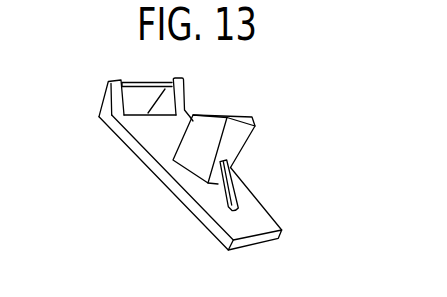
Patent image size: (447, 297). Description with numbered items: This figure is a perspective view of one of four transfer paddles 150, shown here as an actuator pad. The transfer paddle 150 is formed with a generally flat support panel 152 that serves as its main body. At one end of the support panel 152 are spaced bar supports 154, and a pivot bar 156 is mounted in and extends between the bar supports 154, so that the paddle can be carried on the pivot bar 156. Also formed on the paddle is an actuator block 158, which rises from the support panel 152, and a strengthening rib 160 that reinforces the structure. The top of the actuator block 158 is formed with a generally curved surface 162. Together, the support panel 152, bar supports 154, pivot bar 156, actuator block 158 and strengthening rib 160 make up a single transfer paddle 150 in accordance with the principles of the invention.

The transfer paddle 150 is at (132, 163).
The support panel 152 is at (262, 221).
The bar supports 154 is at (110, 93).
The pivot bar 156 is at (141, 84).
The actuator block 158 is at (238, 137).
The strengthening rib 160 is at (209, 186).
The curved surface 162 is at (251, 117).